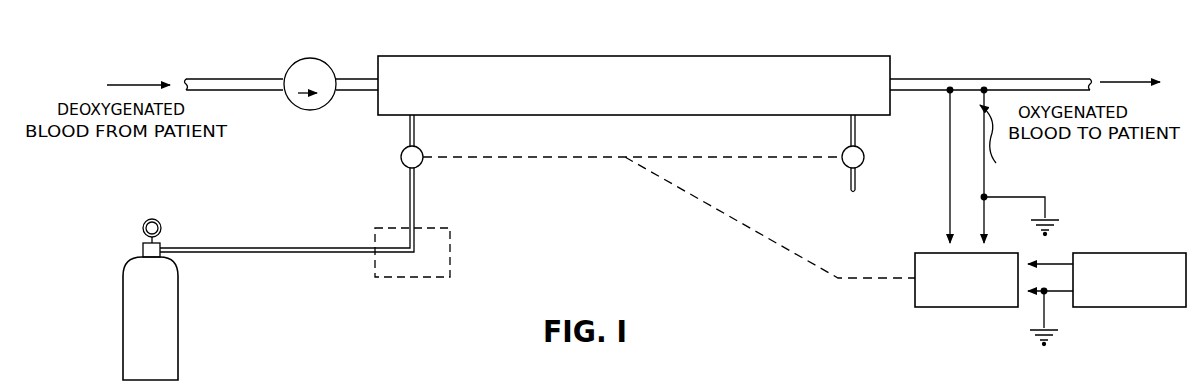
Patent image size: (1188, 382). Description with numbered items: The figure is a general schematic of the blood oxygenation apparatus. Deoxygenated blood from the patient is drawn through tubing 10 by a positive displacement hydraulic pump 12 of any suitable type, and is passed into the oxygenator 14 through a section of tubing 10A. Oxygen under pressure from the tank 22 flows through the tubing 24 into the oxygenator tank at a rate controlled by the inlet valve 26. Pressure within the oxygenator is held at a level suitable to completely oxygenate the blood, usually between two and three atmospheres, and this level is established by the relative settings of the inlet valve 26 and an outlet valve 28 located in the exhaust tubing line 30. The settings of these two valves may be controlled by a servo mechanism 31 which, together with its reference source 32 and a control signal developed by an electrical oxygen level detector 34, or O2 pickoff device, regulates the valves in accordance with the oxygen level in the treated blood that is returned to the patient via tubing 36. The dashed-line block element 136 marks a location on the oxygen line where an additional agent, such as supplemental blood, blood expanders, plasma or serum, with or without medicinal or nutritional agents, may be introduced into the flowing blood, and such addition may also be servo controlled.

The tubing 10 is at (226, 80).
The positive displacement hydraulic pump 12 is at (296, 64).
The section of tubing 10A is at (357, 98).
The oxygenator 14 is at (570, 58).
The tank 22 is at (166, 349).
The tubing 24 is at (250, 225).
The inlet valve 26 is at (400, 169).
The outlet valve 28 is at (864, 157).
The exhaust tubing line 30 is at (857, 175).
The servo mechanism 31 is at (951, 299).
The reference source 32 is at (1147, 298).
The electrical oxygen level detector 34 is at (964, 80).
The tubing 36 is at (1057, 82).
The dashed-line block element 136 is at (437, 226).